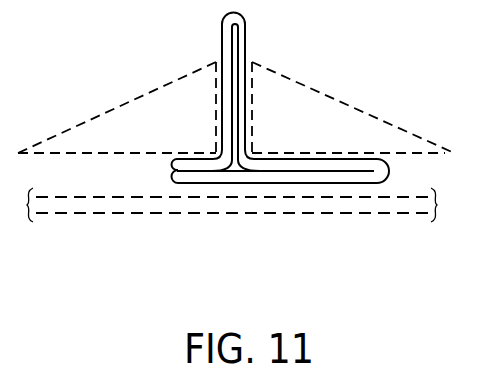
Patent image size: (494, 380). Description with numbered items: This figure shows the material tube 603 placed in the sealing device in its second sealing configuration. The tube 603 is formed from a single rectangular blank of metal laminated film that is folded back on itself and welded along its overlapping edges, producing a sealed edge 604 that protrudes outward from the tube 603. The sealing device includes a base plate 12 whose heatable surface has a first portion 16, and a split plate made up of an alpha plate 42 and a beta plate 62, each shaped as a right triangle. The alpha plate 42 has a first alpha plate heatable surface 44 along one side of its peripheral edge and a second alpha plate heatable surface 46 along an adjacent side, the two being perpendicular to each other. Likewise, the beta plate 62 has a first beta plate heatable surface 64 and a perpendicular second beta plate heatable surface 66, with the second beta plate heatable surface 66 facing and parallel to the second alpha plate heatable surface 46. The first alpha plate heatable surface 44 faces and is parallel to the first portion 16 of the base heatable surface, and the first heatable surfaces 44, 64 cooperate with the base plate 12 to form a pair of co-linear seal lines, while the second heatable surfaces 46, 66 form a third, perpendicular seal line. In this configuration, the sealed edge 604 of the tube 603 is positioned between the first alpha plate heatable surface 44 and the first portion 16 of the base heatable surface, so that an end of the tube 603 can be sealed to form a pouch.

The base plate 12 is at (357, 202).
The first portion of the base heatable surface 16 is at (70, 184).
The alpha plate 42 is at (137, 108).
The first alpha plate heatable surface 44 is at (127, 152).
The second alpha plate heatable surface 46 is at (216, 62).
The beta plate 62 is at (330, 107).
The first beta plate heatable surface 64 is at (398, 163).
The second beta plate heatable surface 66 is at (252, 62).
The tube 603 is at (258, 183).
The sealed edge 604 is at (198, 171).